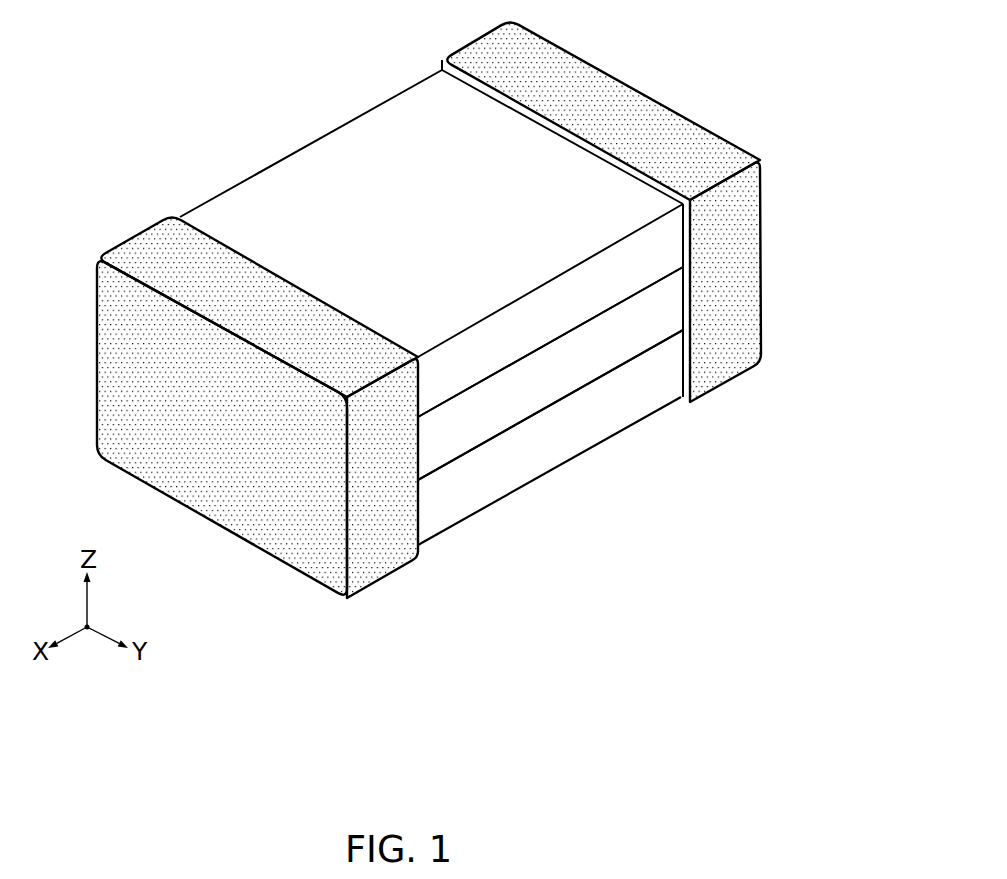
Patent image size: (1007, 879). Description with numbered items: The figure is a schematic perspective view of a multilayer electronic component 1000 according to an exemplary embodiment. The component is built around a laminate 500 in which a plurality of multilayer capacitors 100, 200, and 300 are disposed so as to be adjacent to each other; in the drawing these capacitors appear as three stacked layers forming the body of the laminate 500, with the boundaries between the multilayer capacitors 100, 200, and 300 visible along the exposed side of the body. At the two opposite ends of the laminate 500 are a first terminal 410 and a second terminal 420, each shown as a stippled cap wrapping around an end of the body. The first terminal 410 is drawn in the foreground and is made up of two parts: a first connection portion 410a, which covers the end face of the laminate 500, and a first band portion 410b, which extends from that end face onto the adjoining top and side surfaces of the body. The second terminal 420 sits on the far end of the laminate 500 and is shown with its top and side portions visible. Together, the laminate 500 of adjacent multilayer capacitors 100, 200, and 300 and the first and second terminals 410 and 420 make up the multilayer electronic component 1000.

The multilayer electronic component 1000 is at (270, 26).
The multilayer capacitor 100 is at (570, 308).
The multilayer capacitor 200 is at (533, 408).
The multilayer capacitor 300 is at (500, 498).
The first terminal 410 is at (263, 460).
The first connection portion 410a is at (307, 537).
The first band portion 410b is at (377, 567).
The second terminal 420 is at (640, 80).
The laminate 500 is at (272, 151).